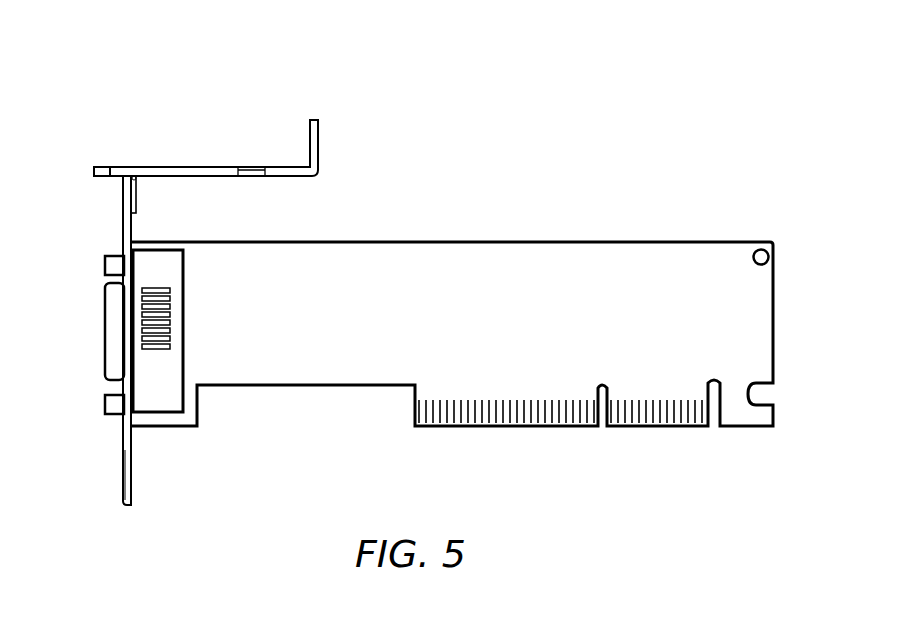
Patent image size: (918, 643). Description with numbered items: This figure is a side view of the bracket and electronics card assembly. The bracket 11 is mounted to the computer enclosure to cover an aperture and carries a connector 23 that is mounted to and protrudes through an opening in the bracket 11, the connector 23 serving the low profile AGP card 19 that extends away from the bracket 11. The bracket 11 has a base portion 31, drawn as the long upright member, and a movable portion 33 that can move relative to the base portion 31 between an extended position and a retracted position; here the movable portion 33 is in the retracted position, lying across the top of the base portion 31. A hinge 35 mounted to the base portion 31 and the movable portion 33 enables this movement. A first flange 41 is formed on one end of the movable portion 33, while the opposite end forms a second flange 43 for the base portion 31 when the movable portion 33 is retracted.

The bracket 11 is at (357, 54).
The low profile AGP card 19 is at (276, 346).
The connector 23 is at (113, 333).
The base portion 31 is at (124, 245).
The movable portion 33 is at (232, 167).
The hinge 35 is at (137, 189).
The first flange 41 is at (320, 142).
The second flange 43 is at (100, 166).